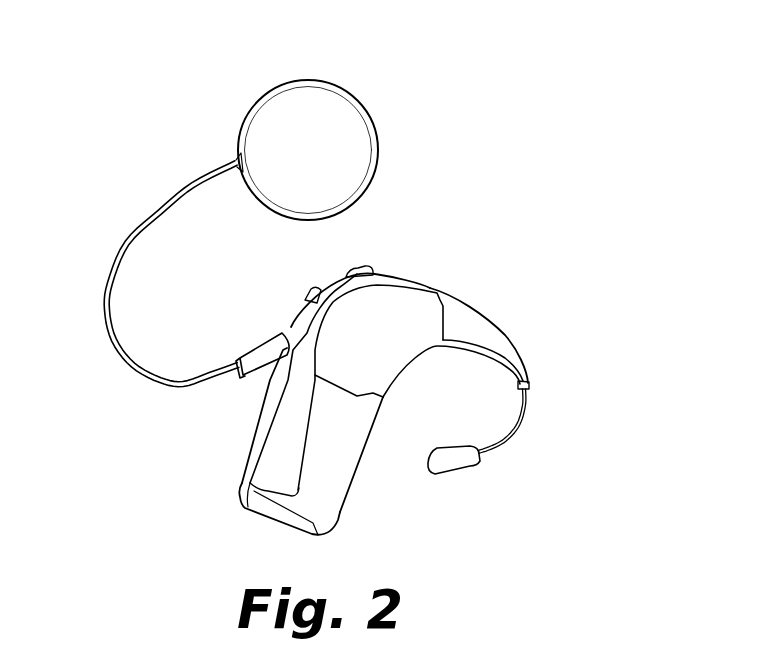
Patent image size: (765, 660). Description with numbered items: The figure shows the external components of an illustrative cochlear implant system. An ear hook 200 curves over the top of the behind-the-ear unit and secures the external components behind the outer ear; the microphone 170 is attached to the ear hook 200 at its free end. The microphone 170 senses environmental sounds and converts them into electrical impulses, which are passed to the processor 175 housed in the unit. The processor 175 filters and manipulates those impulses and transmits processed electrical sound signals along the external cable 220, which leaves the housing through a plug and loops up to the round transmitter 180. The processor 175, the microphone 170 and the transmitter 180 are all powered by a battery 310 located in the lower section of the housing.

The microphone 170 is at (472, 465).
The processor 175 is at (393, 373).
The transmitter 180 is at (315, 82).
The ear hook 200 is at (463, 300).
The external cable 220 is at (157, 220).
The battery 310 is at (340, 505).